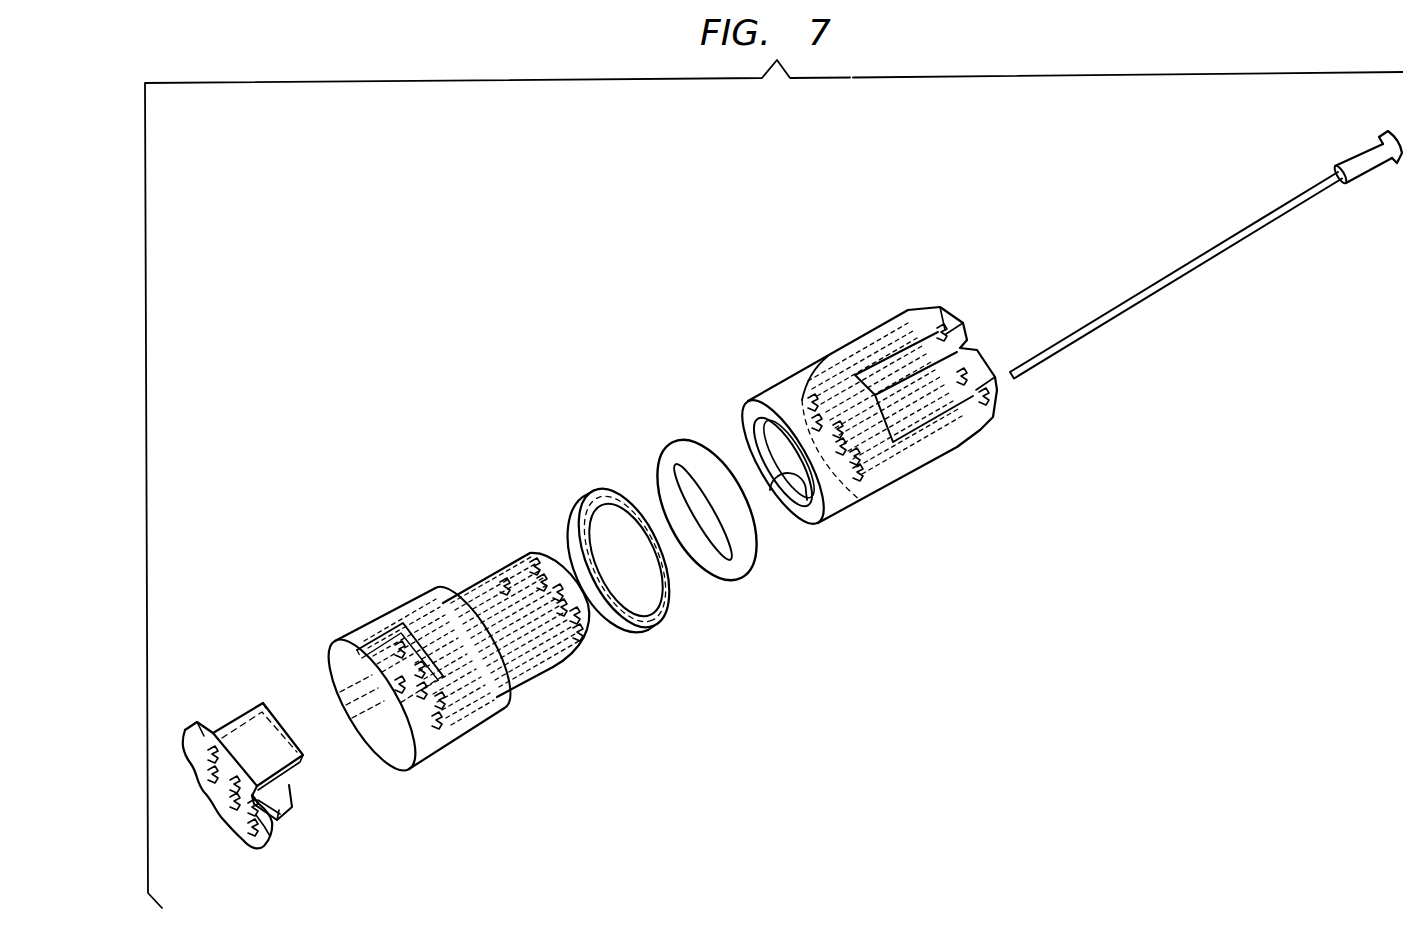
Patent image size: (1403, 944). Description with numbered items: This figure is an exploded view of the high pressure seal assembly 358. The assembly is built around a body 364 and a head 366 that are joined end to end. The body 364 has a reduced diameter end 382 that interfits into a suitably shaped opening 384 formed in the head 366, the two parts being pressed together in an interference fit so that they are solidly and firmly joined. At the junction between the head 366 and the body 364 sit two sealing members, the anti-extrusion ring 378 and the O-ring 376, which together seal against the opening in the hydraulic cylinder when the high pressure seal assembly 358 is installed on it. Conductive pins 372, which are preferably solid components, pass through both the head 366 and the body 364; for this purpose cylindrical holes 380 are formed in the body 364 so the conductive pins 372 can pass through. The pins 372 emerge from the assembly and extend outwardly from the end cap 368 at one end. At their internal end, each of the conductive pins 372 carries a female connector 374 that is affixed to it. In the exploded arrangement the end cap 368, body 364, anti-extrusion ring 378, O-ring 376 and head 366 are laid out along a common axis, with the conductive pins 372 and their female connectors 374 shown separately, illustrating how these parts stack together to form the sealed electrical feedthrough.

The high pressure seal assembly 358 is at (518, 443).
The body 364 is at (457, 743).
The head 366 is at (936, 461).
The end cap 368 is at (197, 725).
The conductive pins 372 is at (1130, 308).
The female connectors 374 is at (1356, 158).
The O-ring 376 is at (680, 440).
The anti-extrusion ring 378 is at (580, 496).
The cylindrical holes 380 is at (498, 571).
The reduced diameter end 382 is at (550, 670).
The opening 384 is at (770, 490).